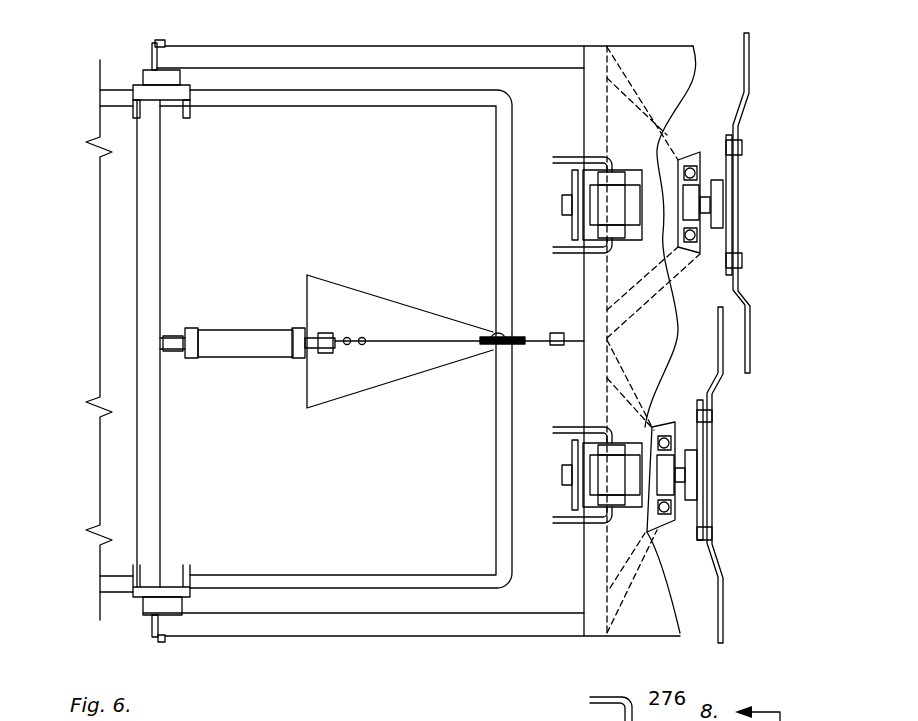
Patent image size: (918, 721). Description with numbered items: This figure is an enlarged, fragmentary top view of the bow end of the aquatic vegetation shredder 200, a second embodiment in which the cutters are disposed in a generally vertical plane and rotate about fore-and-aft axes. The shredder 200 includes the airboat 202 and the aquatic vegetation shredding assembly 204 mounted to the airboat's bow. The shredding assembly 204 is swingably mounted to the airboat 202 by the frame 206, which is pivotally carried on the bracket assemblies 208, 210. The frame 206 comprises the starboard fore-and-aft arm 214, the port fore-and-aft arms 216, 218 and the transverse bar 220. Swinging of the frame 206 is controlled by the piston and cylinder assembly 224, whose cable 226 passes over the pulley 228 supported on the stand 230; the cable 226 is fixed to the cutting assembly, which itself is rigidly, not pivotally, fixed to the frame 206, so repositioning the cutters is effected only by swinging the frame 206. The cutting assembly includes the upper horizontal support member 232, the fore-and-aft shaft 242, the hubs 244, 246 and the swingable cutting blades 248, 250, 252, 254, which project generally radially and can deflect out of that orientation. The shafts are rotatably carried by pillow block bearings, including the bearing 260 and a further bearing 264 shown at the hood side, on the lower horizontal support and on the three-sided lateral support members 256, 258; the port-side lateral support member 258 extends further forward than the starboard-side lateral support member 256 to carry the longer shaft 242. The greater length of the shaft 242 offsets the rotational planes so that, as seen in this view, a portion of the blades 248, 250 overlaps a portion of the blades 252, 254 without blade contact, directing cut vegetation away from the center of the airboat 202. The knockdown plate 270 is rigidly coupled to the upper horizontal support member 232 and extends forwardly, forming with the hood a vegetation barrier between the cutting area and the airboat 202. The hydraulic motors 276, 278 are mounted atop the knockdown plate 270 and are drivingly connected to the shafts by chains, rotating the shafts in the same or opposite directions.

The aquatic vegetation shredder 200 is at (83, 358).
The airboat 202 is at (125, 190).
The aquatic vegetation shredding assembly 204 is at (718, 54).
The frame 206 is at (548, 40).
The bracket assembly 208 is at (165, 605).
The bracket assembly 210 is at (168, 78).
The starboard fore-and-aft arm 214 is at (400, 628).
The port fore-and-aft arm 216 is at (150, 56).
The port fore-and-aft arm 218 is at (255, 57).
The transverse bar 220 is at (160, 252).
The piston and cylinder assembly 224 is at (258, 304).
The cable 226 is at (400, 340).
The pulley 228 is at (500, 336).
The stand 230 is at (352, 295).
The upper horizontal support member 232 is at (598, 85).
The shaft 242 is at (676, 200).
The hub 244 is at (693, 467).
The hub 246 is at (720, 210).
The swingable cutting blade 248 is at (723, 612).
The swingable cutting blade 250 is at (722, 380).
The swingable cutting blade 252 is at (751, 337).
The swingable cutting blade 254 is at (750, 97).
The starboard-side lateral support member 256 is at (657, 540).
The port-side lateral support member 258 is at (678, 255).
The pillow block bearing 260 is at (665, 483).
The upper bearing 264 is at (690, 200).
The knockdown plate 270 is at (648, 623).
The hydraulic motor 276 is at (612, 520).
The hydraulic motor 278 is at (612, 200).